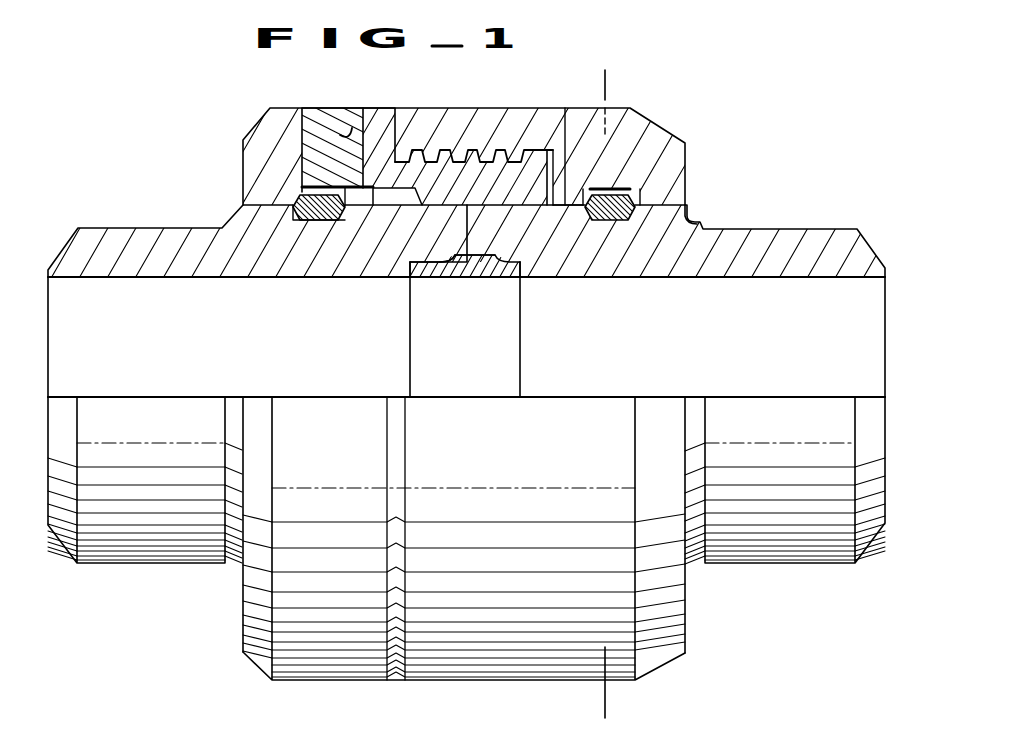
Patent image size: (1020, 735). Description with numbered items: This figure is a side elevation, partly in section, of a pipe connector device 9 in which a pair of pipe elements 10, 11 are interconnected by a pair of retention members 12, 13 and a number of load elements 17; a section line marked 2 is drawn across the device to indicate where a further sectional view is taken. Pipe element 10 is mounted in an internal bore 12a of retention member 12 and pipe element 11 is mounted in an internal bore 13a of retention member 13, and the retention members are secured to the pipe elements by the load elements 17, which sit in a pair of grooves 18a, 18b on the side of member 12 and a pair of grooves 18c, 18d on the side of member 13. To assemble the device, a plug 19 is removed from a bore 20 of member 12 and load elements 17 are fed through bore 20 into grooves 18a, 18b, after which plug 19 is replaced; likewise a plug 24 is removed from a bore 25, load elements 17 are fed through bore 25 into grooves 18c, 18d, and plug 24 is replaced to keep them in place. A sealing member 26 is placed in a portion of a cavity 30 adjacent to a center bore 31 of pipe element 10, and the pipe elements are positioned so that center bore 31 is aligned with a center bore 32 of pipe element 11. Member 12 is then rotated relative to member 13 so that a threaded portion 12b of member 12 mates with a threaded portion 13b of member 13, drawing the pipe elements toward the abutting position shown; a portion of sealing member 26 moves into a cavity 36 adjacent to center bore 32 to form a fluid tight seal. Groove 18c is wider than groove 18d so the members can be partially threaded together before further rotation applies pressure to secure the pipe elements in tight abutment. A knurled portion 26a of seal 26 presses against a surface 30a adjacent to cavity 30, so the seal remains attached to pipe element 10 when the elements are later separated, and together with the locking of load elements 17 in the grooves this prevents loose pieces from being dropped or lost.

The pipe connector device 9 is at (754, 116).
The pipe element 10 is at (814, 232).
The pipe element 11 is at (125, 230).
The retention member 12 is at (500, 103).
The internal bore 12a is at (693, 220).
The threaded portion 12b is at (402, 162).
The retention member 13 is at (375, 104).
The internal bore 13a is at (537, 208).
The threaded portion 13b is at (440, 156).
The load element 17 is at (303, 200).
The groove 18a is at (619, 204).
The groove 18b is at (621, 217).
The groove 18c is at (362, 196).
The groove 18d is at (318, 214).
The plug 19 is at (622, 123).
The bore 20 is at (568, 131).
The plug 24 is at (310, 114).
The bore 25 is at (352, 128).
The sealing member 26 is at (428, 272).
The knurled portion 26a is at (470, 263).
The cavity 30 is at (490, 268).
The surface 30a is at (478, 258).
The center bore 31 is at (790, 374).
The center bore 32 is at (213, 366).
The cavity 36 is at (446, 268).
The section line 2- 2 is at (680, 83).